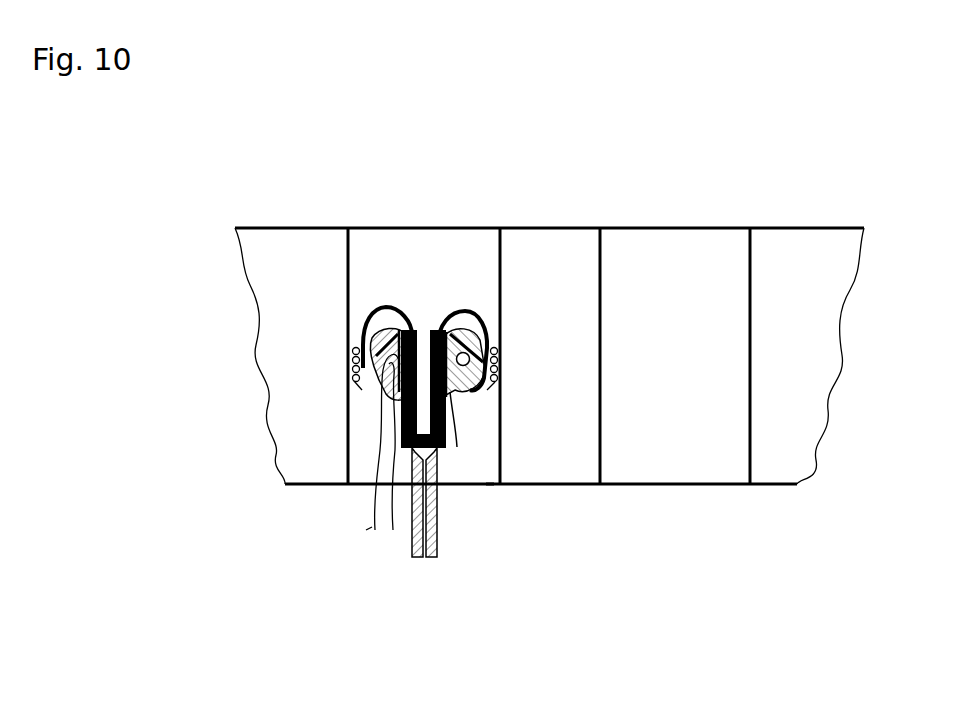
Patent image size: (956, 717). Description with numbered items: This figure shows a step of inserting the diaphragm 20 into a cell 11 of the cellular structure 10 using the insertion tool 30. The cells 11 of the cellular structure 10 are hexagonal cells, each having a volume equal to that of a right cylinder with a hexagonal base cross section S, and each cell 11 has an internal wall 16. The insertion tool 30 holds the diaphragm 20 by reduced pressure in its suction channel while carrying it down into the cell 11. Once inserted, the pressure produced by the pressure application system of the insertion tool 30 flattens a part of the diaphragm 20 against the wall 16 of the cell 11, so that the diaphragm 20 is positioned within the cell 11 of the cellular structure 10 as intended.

The cellular structure 10 is at (430, 198).
The cell 11 is at (396, 268).
The diaphragm 20 is at (470, 303).
The internal wall 16 is at (495, 410).
The insertion tool 30 is at (442, 532).
The hexagonal base cross section S is at (491, 489).